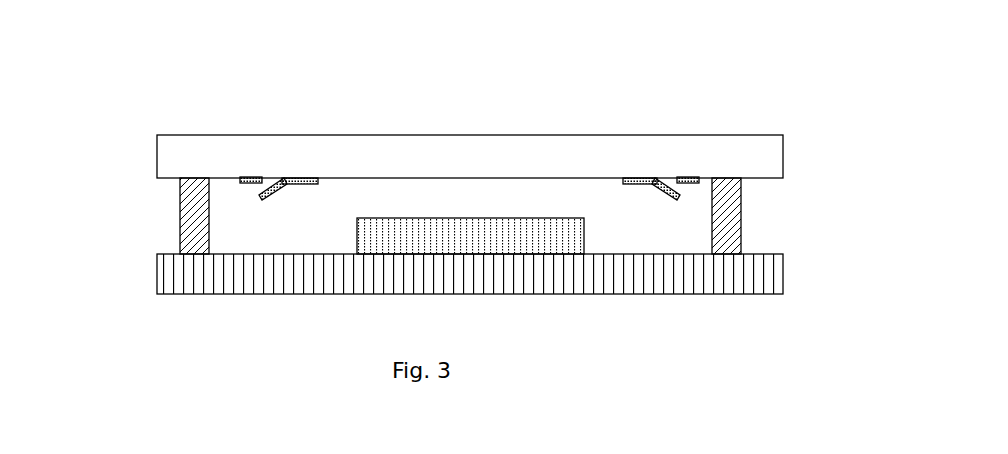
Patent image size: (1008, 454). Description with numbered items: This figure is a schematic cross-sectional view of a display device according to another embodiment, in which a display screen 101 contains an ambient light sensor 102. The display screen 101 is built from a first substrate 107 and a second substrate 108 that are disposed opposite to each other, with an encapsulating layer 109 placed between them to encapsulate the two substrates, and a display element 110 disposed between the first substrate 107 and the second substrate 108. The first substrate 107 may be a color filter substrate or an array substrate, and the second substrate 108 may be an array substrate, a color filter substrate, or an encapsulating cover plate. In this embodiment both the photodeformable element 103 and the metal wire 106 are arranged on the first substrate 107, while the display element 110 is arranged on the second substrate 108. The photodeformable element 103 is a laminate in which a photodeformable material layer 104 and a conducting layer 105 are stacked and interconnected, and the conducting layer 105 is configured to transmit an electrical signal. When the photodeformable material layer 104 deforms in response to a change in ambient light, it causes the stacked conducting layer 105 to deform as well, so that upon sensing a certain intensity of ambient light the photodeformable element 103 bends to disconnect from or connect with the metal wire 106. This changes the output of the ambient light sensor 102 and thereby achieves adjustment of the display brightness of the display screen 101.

The display screen 101 is at (730, 227).
The ambient light sensor 102 is at (664, 58).
The photodeformable element 103 is at (640, 107).
The photodeformable material layer 104 is at (632, 180).
The conducting layer 105 is at (664, 178).
The metal wire 106 is at (690, 177).
The first substrate 107 is at (737, 155).
The second substrate 108 is at (753, 280).
The encapsulating layer 109 is at (195, 218).
The display element 110 is at (395, 230).